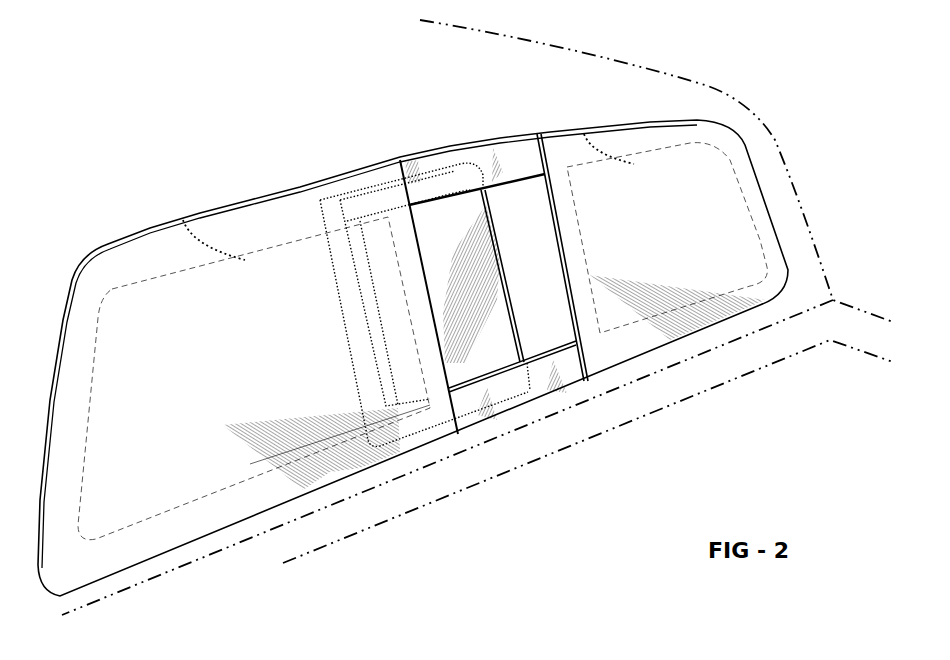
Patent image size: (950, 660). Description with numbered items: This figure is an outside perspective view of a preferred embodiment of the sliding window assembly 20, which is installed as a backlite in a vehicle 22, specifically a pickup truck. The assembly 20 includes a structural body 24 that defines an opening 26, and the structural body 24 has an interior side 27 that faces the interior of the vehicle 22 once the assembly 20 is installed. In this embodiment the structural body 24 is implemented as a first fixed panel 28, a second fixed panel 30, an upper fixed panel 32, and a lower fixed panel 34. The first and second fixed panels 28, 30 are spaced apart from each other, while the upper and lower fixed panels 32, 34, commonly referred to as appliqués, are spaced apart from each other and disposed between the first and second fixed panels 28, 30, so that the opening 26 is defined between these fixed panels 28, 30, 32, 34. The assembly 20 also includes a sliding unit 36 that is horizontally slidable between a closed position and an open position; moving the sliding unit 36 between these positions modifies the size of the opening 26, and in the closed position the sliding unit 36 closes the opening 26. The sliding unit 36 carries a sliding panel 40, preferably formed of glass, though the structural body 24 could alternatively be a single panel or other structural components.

The sliding window assembly 20 is at (468, 128).
The vehicle 22 is at (703, 84).
The structural body 24 is at (750, 138).
The opening 26 is at (558, 338).
The interior side 27 is at (584, 134).
The first fixed panel 28 is at (140, 512).
The second fixed panel 30 is at (752, 256).
The upper fixed panel 32 is at (410, 158).
The lower fixed panel 34 is at (497, 420).
The sliding unit 36 is at (504, 240).
The sliding panel 40 is at (457, 352).